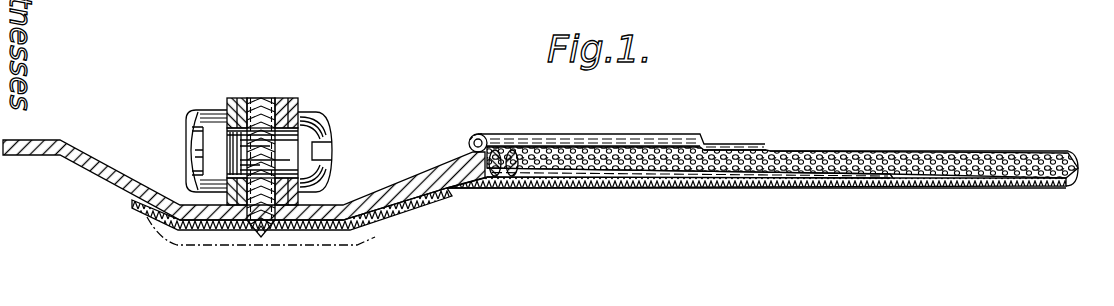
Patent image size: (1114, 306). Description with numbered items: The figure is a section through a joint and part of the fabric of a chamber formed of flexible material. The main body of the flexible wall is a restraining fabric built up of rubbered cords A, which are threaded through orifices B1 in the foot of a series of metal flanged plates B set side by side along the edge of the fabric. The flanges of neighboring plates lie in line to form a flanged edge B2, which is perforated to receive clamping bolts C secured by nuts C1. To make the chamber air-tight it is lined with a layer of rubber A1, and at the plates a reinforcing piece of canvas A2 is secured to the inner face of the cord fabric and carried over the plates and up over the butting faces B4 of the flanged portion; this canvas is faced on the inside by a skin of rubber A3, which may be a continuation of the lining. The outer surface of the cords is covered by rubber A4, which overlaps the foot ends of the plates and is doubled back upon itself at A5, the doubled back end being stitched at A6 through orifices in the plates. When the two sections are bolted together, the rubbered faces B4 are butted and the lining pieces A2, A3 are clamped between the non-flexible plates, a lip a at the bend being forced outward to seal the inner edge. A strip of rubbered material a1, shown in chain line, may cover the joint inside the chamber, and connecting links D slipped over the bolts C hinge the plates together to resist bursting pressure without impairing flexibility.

The flanged plate B is at (121, 178).
The orifice B1 is at (483, 178).
The flanged edge B2 is at (304, 89).
The butting face B4 is at (264, 98).
The bolt C is at (312, 146).
The nut C1 is at (195, 110).
The connecting link D is at (310, 109).
The rubbered cord A is at (727, 150).
The rubber lining A1 is at (1020, 186).
The reinforcing canvas piece A2 is at (883, 179).
The rubber skin A3 is at (812, 183).
The outer rubber covering A4 is at (857, 151).
The doubled back end A5 is at (477, 134).
The stitching A6 is at (490, 131).
The lip a is at (262, 237).
The covering strip a1 is at (367, 233).